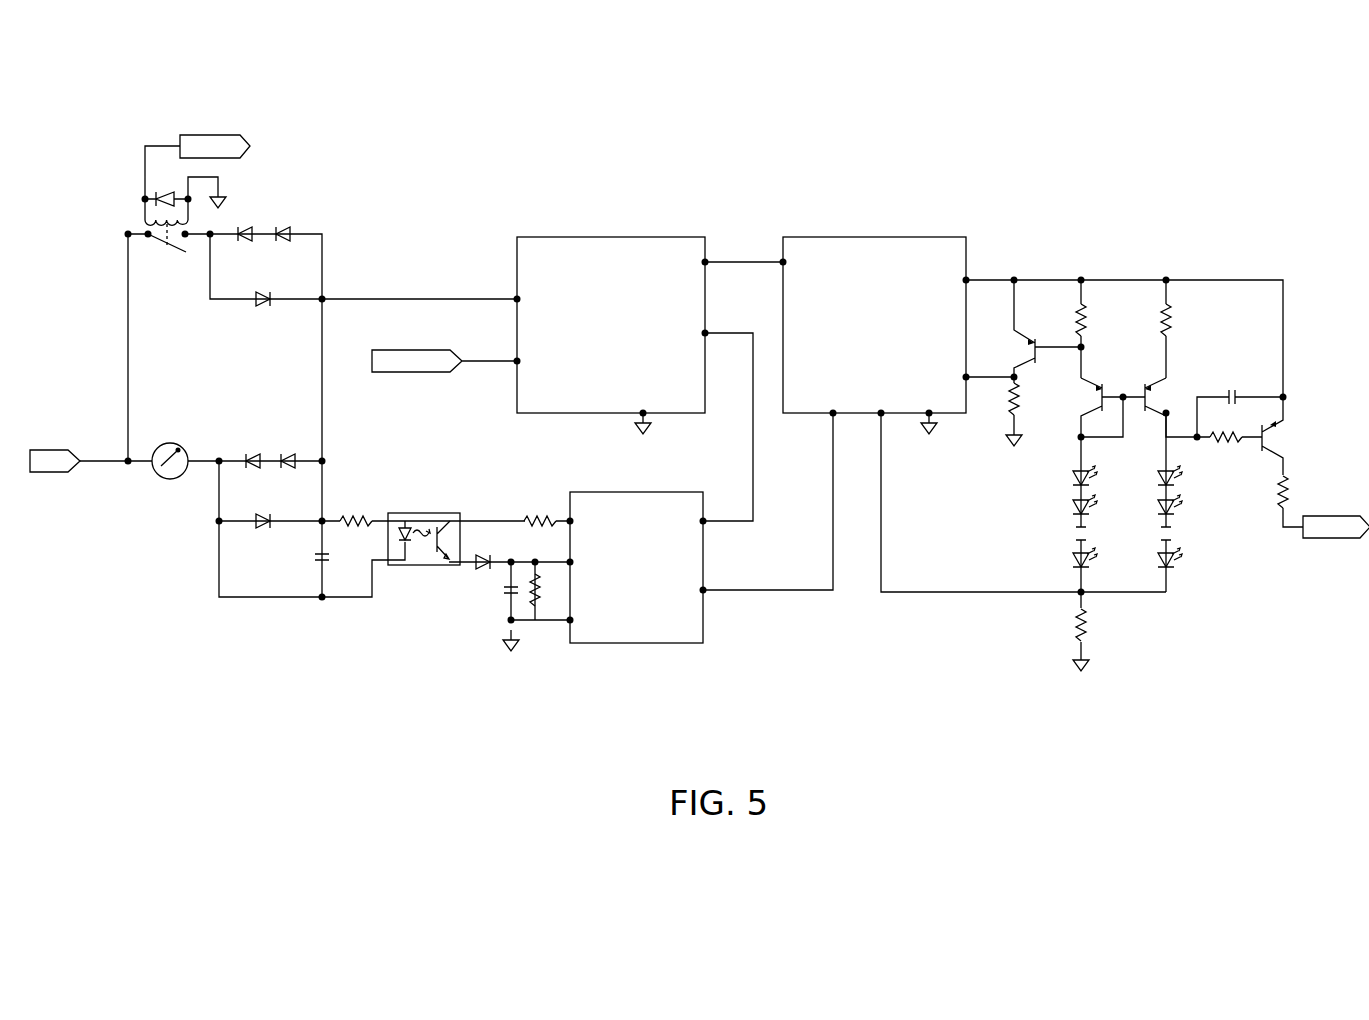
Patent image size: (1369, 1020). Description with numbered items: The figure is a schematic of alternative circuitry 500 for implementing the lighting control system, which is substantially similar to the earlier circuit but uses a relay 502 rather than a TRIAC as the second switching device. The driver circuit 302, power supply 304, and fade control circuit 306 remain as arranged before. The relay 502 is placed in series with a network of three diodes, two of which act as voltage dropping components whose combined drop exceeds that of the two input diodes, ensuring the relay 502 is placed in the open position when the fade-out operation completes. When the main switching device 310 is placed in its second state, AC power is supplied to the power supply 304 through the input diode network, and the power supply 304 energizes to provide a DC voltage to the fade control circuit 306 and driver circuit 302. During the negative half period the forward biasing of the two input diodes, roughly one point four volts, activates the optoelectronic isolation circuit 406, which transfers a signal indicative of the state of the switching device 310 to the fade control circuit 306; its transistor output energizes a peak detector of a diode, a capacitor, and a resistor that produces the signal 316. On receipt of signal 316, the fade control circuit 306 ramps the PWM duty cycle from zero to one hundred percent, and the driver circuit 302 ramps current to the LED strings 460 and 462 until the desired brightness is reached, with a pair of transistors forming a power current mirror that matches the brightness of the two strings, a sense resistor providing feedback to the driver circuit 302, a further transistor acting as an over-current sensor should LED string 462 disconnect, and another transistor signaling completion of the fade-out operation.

The circuitry 500 is at (1022, 128).
The relay 502 is at (121, 205).
The driver circuit 302 is at (906, 237).
The power supply 304 is at (517, 415).
The fade control circuit 306 is at (690, 489).
The main switching device 310 is at (172, 482).
The signal 316 is at (554, 538).
The optoelectronic isolation circuit 406 is at (421, 512).
The LED string 460 is at (1032, 522).
The LED string 462 is at (1230, 565).